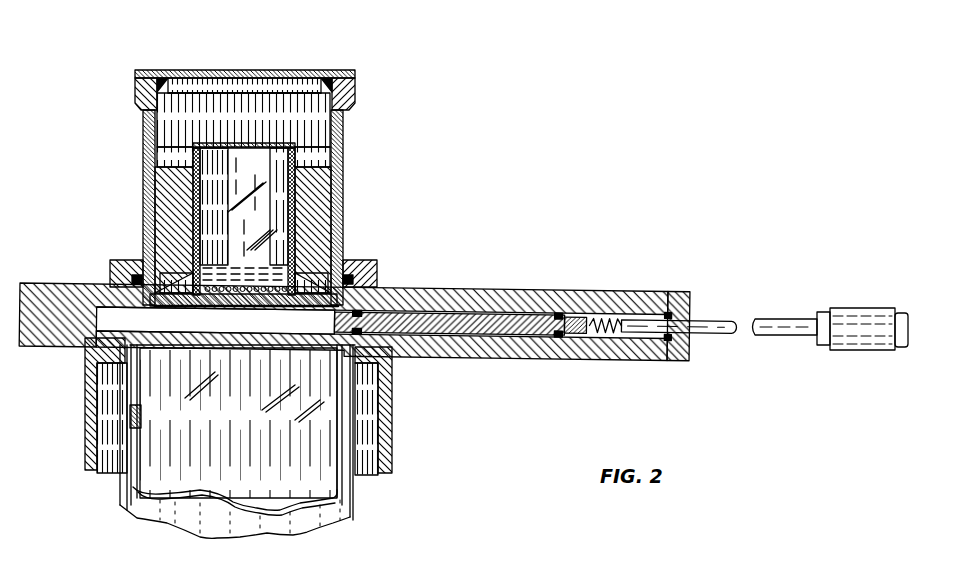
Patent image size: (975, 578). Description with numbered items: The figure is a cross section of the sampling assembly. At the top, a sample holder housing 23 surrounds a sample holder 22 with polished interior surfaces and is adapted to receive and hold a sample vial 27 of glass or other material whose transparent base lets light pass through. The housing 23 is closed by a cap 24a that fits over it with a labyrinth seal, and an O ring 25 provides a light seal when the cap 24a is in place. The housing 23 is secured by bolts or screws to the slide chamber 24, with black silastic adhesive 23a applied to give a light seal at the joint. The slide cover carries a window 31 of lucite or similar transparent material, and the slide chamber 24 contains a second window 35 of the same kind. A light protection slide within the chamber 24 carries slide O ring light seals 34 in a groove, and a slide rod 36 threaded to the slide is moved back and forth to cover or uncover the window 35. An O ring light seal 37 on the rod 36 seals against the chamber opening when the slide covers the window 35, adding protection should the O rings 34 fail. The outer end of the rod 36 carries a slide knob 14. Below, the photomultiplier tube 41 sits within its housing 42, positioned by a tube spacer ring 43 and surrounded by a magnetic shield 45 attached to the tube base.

The slide knob 14 is at (848, 308).
The sample holder 22 is at (324, 211).
The sample holder housing 23 is at (344, 144).
The black silastic adhesive 23a is at (118, 272).
The slide chamber 24 is at (506, 290).
The cap 24a is at (227, 70).
The O ring 25 is at (147, 73).
The sample vial 27 is at (241, 147).
The window 31 is at (284, 301).
The slide O ring light seals 34 is at (359, 330).
The window 35 is at (198, 330).
The slide rod 36 is at (712, 312).
The O ring light seal 37 is at (673, 300).
The photomultiplier tube 41 is at (150, 476).
The housing 42 is at (87, 401).
The tube spacer ring 43 is at (130, 414).
The magnetic shield 45 is at (355, 492).